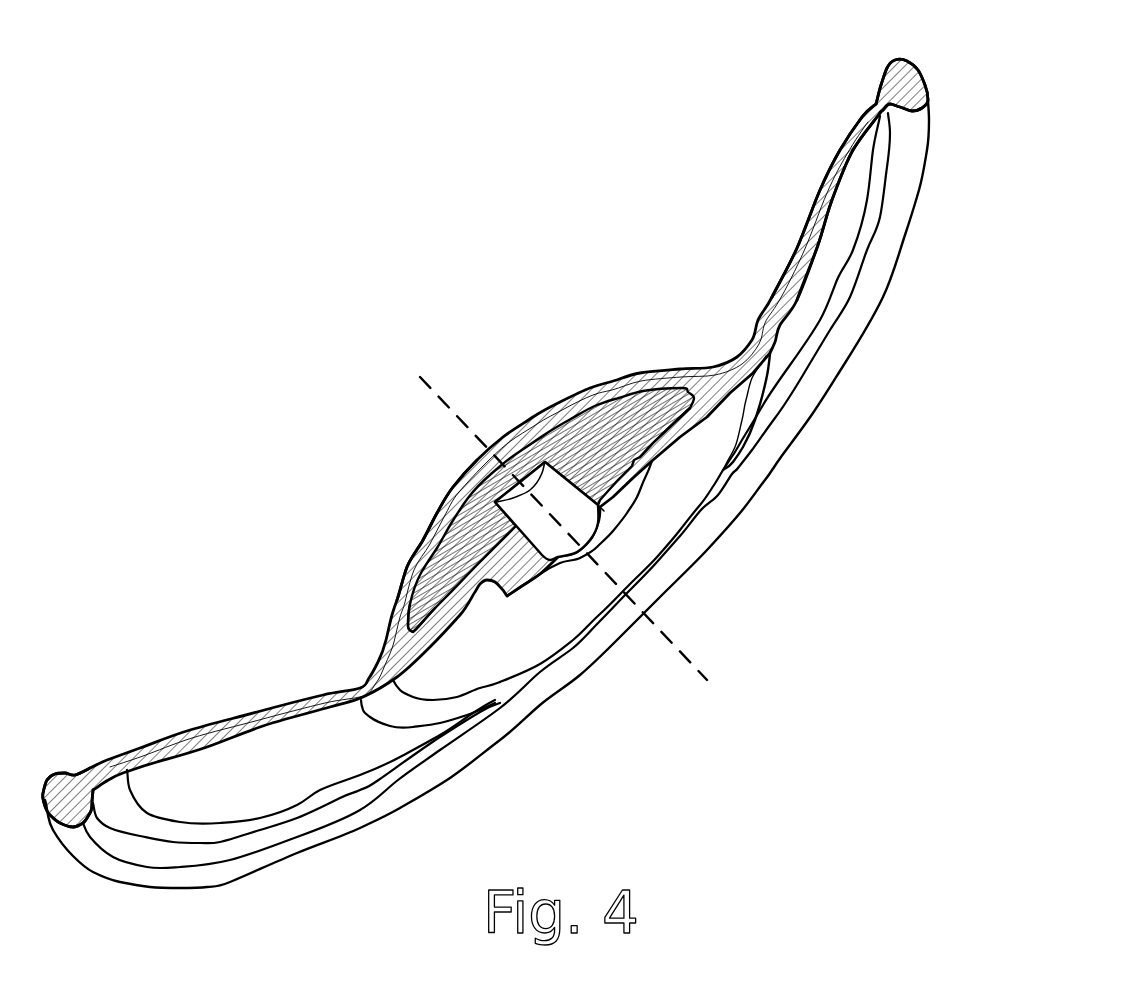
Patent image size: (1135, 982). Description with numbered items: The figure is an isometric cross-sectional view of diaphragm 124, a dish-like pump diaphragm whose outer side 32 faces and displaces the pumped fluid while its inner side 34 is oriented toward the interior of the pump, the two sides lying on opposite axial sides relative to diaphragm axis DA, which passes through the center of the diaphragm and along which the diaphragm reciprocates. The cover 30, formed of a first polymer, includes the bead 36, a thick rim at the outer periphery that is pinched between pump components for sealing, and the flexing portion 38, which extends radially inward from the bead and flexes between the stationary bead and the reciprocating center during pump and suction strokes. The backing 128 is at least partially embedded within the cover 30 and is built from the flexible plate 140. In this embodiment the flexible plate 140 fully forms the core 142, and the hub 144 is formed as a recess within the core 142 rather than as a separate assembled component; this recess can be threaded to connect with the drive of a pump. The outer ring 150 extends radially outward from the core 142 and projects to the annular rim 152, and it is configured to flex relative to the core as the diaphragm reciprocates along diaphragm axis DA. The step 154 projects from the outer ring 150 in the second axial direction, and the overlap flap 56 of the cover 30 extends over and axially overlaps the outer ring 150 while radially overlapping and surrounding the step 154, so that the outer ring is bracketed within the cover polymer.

The diaphragm 124 is at (503, 446).
The cover 30 is at (503, 446).
The outer side 32 is at (827, 173).
The inner side 34 is at (807, 295).
The bead 36 is at (903, 82).
The flexing portion 38 is at (243, 702).
The backing 128 is at (574, 409).
The flexible plate 140 is at (631, 393).
The overlap flap 56 is at (653, 443).
The core 142 is at (631, 509).
The hub 144 is at (566, 549).
The outer ring 150 is at (447, 590).
The annular rim 152 is at (412, 631).
The step 154 is at (532, 580).
The diaphragm axis DA is at (443, 402).